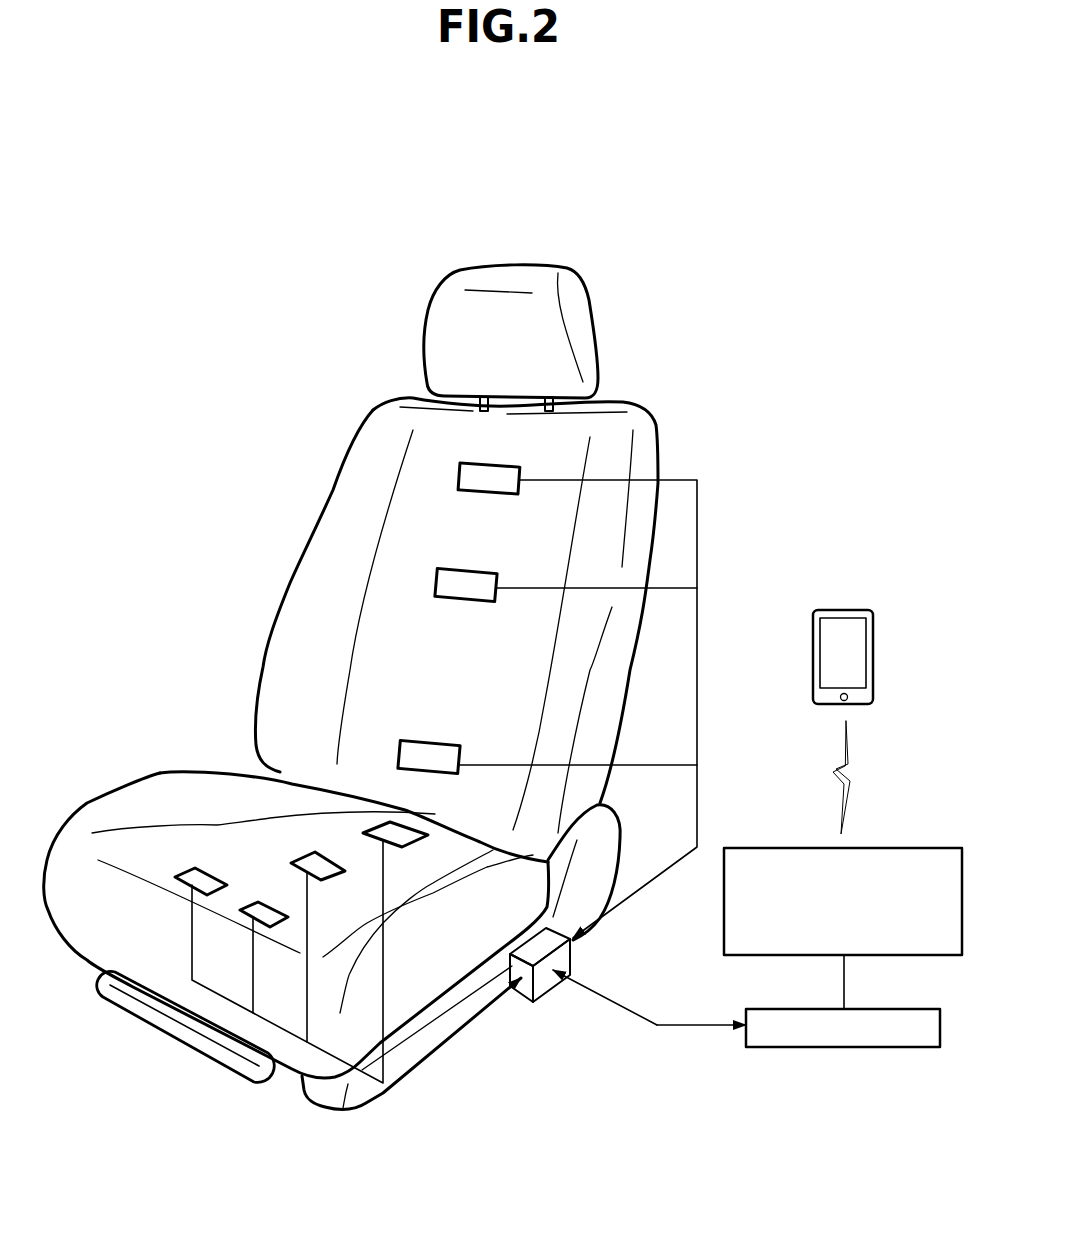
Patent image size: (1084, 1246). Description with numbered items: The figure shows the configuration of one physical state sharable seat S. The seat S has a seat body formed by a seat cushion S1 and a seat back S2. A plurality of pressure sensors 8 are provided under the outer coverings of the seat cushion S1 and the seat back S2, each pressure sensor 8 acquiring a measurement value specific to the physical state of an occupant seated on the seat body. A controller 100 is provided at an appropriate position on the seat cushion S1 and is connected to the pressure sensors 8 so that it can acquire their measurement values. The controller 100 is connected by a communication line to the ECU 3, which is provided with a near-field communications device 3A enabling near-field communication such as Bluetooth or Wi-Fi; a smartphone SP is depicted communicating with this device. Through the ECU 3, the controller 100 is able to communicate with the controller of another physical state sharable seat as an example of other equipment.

The physical state sharable seat S is at (192, 378).
The seat cushion S1 is at (156, 772).
The seat back S2 is at (333, 492).
The pressure sensor 8 is at (473, 493).
The controller 100 is at (546, 1003).
The smartphone SP is at (873, 642).
The near-field communications device 3A is at (896, 846).
The ECU 3 is at (896, 1008).